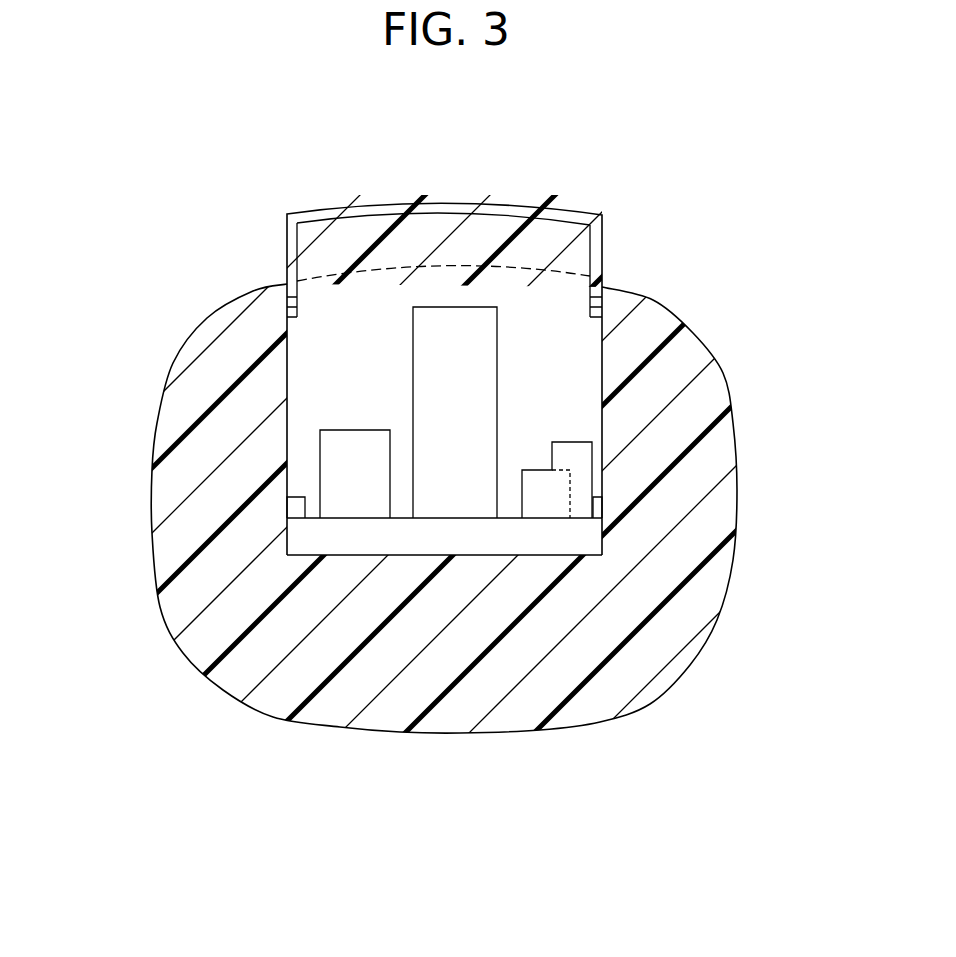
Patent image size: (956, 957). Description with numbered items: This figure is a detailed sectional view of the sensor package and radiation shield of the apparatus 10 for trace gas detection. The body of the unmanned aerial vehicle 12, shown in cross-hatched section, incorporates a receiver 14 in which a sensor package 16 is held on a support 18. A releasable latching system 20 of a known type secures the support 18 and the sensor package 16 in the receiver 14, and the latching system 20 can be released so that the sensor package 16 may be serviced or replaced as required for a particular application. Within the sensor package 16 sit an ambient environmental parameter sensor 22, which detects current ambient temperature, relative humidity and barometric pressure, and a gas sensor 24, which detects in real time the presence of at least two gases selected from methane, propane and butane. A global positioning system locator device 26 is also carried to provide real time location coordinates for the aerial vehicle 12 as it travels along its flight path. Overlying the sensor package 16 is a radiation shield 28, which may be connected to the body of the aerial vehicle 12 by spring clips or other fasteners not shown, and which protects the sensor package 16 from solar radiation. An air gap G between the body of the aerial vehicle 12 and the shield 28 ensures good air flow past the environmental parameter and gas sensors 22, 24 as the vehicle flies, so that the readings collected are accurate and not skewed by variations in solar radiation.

The apparatus 10 is at (160, 218).
The unmanned aerial vehicle 12 is at (658, 662).
The receiver 14 is at (613, 368).
The sensor package 16 is at (524, 328).
The support 18 is at (340, 543).
The releasable latching system 20 is at (292, 508).
The ambient environmental parameter sensor 22 is at (347, 463).
The gas sensor 24 is at (440, 318).
The global positioning system locator device 26 is at (537, 503).
The radiation shield 28 is at (462, 208).
The air gap G is at (517, 238).